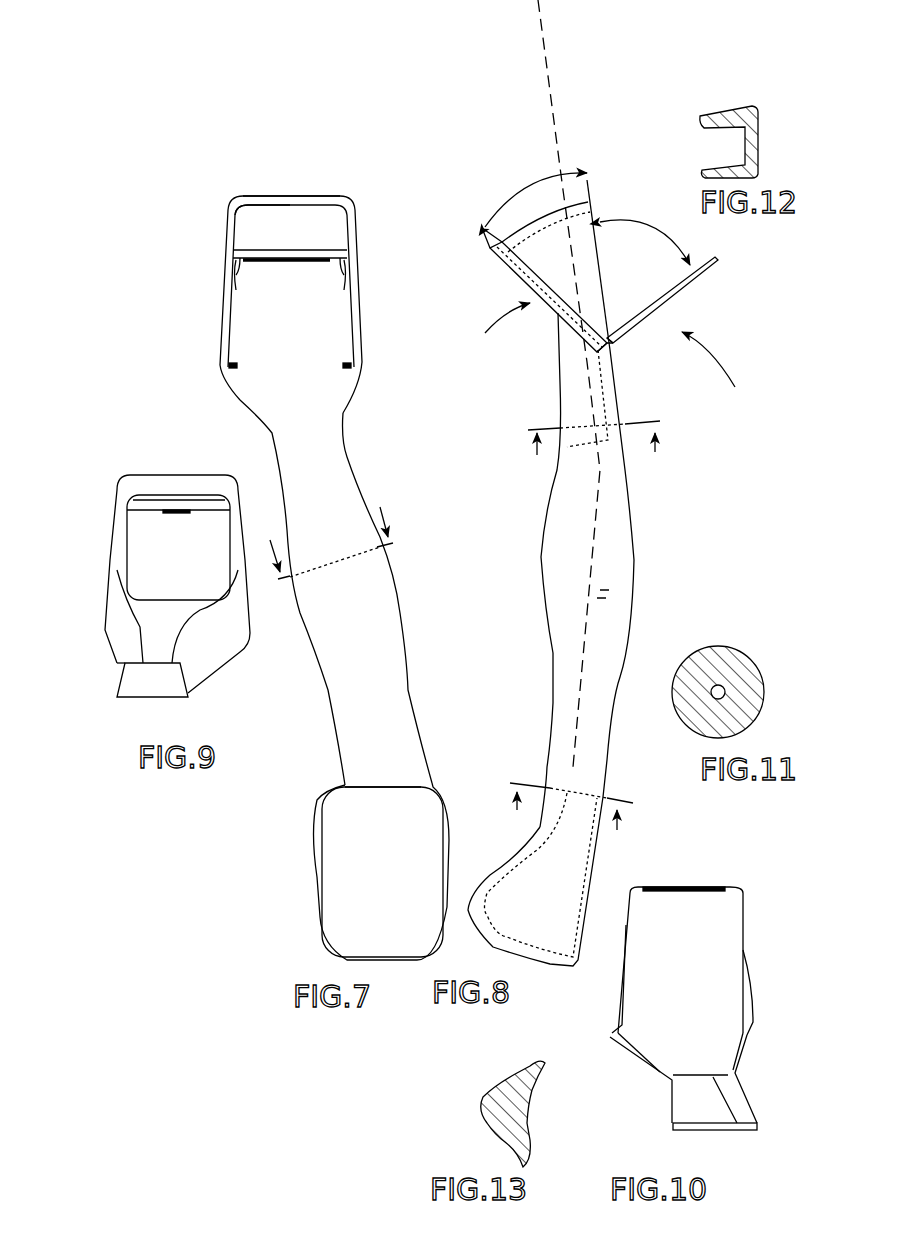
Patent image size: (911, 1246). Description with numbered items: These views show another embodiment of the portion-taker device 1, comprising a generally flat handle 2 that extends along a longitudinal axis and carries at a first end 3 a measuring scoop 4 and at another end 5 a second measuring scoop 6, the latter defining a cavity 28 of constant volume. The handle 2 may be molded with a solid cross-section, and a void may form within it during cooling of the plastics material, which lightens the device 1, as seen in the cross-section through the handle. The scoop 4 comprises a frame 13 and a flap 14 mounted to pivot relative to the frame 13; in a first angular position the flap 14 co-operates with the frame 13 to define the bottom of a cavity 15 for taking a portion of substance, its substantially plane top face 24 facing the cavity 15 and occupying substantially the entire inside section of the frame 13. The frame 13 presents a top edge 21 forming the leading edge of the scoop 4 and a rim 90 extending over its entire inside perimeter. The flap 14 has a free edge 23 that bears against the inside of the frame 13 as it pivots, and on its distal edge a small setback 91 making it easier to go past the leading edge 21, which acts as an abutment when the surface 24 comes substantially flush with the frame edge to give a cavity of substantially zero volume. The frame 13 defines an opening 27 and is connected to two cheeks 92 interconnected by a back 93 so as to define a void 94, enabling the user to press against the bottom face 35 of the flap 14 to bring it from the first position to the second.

In FIG. 7, the portion-taker device 1 is at (198, 177).
In FIG. 8, the portion-taker device 1 is at (537, 503).
In FIG. 7, the handle 2 is at (410, 613).
In FIG. 8, the handle 2 is at (648, 527).
In FIG. 9, the handle 2 is at (137, 690).
In FIG. 11, the handle 2 is at (703, 662).
In FIG. 7, the first end 3 is at (287, 367).
In FIG. 8, the first end 3 is at (608, 350).
In FIG. 10, the first end 3 is at (733, 1128).
In FIG. 7, the measuring scoop 4 is at (202, 325).
In FIG. 8, the measuring scoop 4 is at (537, 330).
In FIG. 9, the measuring scoop 4 is at (87, 515).
In FIG. 10, the measuring scoop 4 is at (765, 1030).
In FIG. 7, the another end 5 is at (373, 778).
In FIG. 8, the another end 5 is at (605, 797).
In FIG. 7, the second measuring scoop 6 is at (322, 910).
In FIG. 8, the second measuring scoop 6 is at (477, 912).
In FIG. 7, the frame 13 is at (290, 195).
In FIG. 8, the frame 13 is at (552, 263).
In FIG. 9, the frame 13 is at (127, 490).
In FIG. 10, the frame 13 is at (755, 995).
In FIG. 7, the flap 14 is at (328, 280).
In FIG. 8, the flap 14 is at (662, 313).
In FIG. 10, the flap 14 is at (700, 952).
In FIG. 7, the cavity 15 is at (267, 283).
In FIG. 7, the top edge 21 is at (283, 195).
In FIG. 9, the top edge 21 is at (177, 510).
In FIG. 10, the free edge 23 is at (627, 930).
In FIG. 7, the top face 24 is at (253, 308).
In FIG. 8, the top face 24 is at (692, 285).
In FIG. 10, the top face 24 is at (720, 915).
In FIG. 9, the opening 27 is at (163, 530).
In FIG. 7, the cavity 28 is at (355, 878).
In FIG. 8, the bottom face 35 is at (630, 323).
In FIG. 8, the rim 90 is at (497, 263).
In FIG. 7, the setback 91 is at (303, 253).
In FIG. 10, the setback 91 is at (690, 886).
In FIG. 9, the cheeks 92 is at (117, 610).
In FIG. 12, the cheeks 92 is at (722, 113).
In FIG. 8, the back 93 is at (615, 400).
In FIG. 12, the back 93 is at (752, 133).
In FIG. 9, the void 94 is at (157, 637).